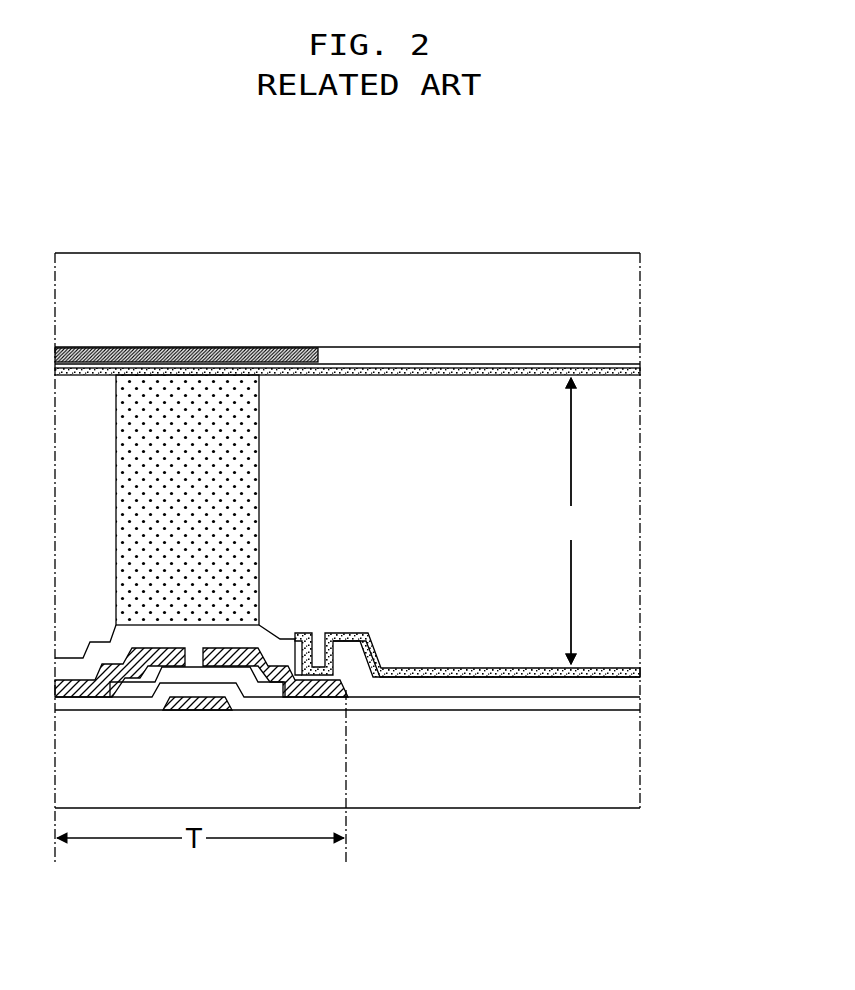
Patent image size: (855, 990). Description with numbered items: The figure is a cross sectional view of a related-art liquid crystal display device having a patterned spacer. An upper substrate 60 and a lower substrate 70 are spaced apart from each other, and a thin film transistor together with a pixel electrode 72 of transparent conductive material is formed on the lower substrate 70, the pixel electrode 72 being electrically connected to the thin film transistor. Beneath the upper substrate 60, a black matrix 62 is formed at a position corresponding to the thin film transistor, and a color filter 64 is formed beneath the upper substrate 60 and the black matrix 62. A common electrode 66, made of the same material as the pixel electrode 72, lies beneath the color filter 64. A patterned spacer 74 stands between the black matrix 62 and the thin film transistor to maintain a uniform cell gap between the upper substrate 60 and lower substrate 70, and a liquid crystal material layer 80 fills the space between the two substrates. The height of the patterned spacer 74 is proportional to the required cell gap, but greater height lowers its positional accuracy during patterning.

The upper substrate 60 is at (653, 253).
The black matrix 62 is at (130, 355).
The color filter 64 is at (428, 363).
The common electrode 66 is at (400, 375).
The lower substrate 70 is at (653, 667).
The pixel electrode 72 is at (406, 665).
The patterned spacer 74 is at (250, 473).
The liquid crystal material layer 80 is at (653, 375).